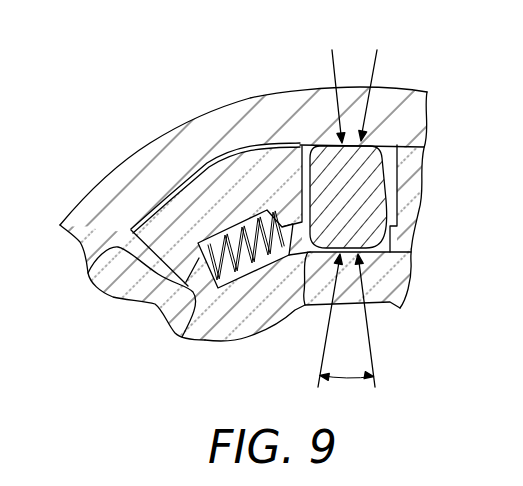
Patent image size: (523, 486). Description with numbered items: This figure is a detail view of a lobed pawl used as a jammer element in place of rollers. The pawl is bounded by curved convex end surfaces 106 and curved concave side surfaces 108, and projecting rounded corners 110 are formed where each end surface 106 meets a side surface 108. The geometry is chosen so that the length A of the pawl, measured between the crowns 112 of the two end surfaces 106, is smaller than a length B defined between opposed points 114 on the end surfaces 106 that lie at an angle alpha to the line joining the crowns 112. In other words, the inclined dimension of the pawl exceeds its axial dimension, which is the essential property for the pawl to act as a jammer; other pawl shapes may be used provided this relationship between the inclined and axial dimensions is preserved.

The end surface 106 is at (337, 143).
The side surface 108 is at (302, 222).
The rounded corner 110 is at (300, 145).
The crown 112 is at (424, 306).
The opposed point 114 is at (344, 257).